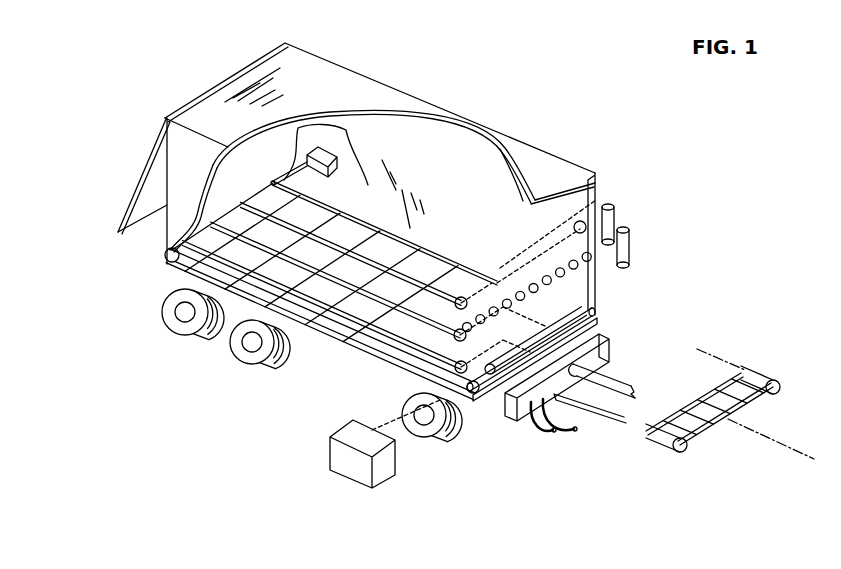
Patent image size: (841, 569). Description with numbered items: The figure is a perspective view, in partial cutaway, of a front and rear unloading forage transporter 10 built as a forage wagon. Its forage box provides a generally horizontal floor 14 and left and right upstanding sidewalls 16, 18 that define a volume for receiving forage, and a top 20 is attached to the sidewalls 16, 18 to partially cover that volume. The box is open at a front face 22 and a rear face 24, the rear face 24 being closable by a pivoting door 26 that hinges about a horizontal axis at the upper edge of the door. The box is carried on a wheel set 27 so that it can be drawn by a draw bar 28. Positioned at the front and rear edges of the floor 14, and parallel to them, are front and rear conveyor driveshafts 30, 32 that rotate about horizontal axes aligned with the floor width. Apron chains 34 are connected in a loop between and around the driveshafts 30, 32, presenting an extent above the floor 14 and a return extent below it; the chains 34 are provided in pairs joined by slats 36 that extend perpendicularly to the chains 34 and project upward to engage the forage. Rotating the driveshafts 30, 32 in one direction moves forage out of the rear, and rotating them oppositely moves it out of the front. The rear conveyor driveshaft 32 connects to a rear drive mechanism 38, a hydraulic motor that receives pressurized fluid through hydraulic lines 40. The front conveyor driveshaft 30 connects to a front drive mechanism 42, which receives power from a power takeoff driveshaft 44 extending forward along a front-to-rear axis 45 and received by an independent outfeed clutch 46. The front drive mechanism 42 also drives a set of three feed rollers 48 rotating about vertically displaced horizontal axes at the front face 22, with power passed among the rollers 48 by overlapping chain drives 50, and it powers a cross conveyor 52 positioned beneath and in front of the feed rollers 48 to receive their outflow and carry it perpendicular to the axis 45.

The front and rear unloading forage transporter 10 is at (536, 60).
The floor 14 is at (187, 310).
The left upstanding sidewall 16 is at (180, 160).
The right upstanding sidewall 18 is at (430, 136).
The top 20 is at (295, 58).
The front face 22 is at (672, 259).
The rear face 24 is at (92, 153).
The pivoting door 26 is at (127, 200).
The wheel set 27 is at (235, 356).
The draw bar 28 is at (600, 420).
The front conveyor driveshaft 30 is at (492, 393).
The rear conveyor driveshaft 32 is at (166, 255).
The apron chains 34 is at (342, 318).
The slats 36 is at (386, 272).
The rear drive mechanism 38 is at (318, 147).
The hydraulic lines 40 is at (572, 430).
The front drive mechanism 42 is at (388, 478).
The power takeoff (PTO) driveshaft 44 is at (623, 383).
The front-to-rear axis 45 is at (778, 447).
The independent outfeed clutch 46 is at (610, 353).
The feed rollers 48 is at (573, 287).
The overlapping chain drives 50 is at (627, 229).
The cross conveyor 52 is at (779, 395).